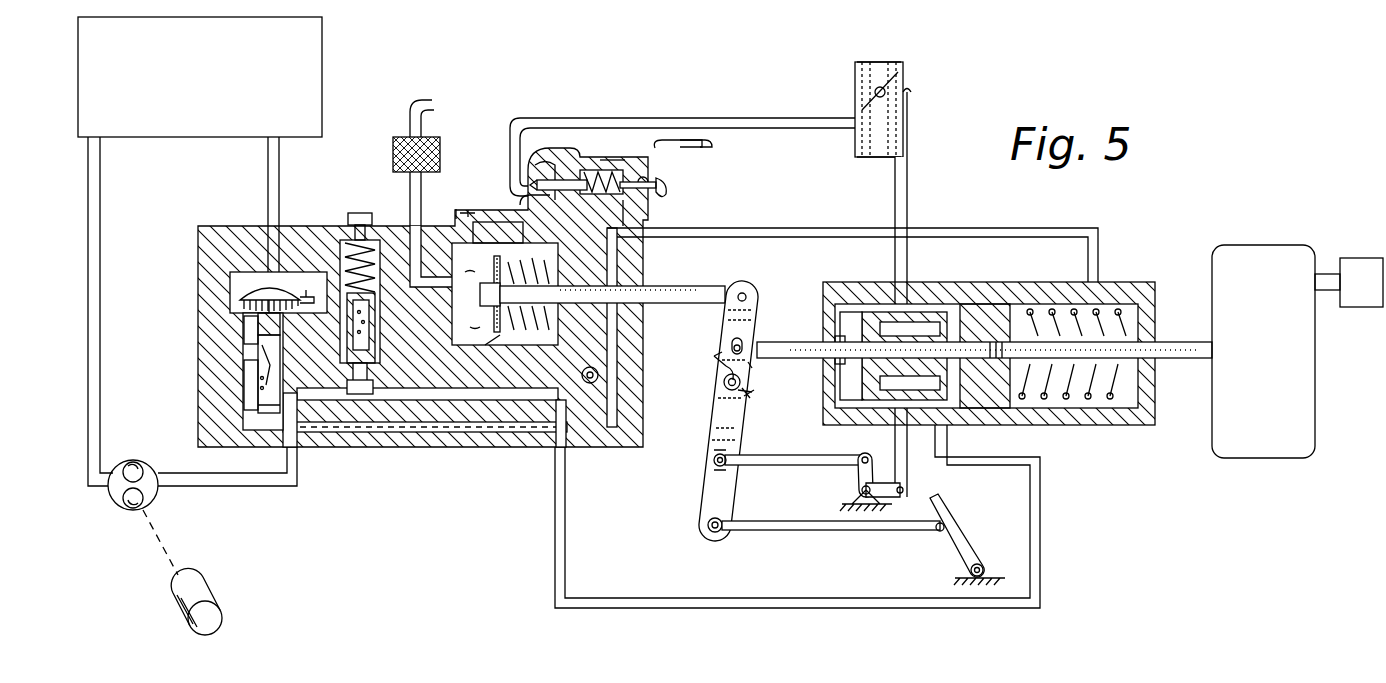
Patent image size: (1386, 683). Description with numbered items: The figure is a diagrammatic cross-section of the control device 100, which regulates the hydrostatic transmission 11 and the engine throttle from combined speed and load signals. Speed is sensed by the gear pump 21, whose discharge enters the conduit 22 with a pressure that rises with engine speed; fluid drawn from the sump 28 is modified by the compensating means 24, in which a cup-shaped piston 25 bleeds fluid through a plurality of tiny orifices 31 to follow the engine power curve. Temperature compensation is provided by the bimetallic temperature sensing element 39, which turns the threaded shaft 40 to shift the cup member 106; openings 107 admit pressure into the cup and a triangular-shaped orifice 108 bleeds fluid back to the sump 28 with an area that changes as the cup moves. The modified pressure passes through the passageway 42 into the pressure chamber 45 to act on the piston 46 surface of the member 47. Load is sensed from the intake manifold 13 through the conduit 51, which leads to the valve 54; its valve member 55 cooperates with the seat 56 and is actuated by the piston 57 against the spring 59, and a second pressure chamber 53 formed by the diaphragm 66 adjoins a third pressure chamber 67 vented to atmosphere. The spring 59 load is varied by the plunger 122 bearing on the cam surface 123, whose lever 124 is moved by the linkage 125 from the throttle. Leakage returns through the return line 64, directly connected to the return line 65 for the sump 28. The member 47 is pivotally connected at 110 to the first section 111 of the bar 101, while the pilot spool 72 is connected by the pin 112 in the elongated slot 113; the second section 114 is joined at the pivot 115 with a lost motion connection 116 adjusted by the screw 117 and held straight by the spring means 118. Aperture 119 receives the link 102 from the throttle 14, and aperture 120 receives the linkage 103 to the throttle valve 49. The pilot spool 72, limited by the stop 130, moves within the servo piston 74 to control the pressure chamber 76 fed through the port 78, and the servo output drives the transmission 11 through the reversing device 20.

The hydrostatic transmission 11 is at (1362, 260).
The intake manifold 13 is at (855, 135).
The throttle 14 is at (948, 530).
The reversing device 20 is at (1236, 258).
The pump means 21 is at (152, 497).
The conduit 22 is at (266, 483).
The compensating means 24 is at (350, 204).
The cup-shaped piston 25 is at (376, 340).
The sump 28 is at (202, 100).
The orifices 31 is at (372, 312).
The temperature sensing element 39 is at (248, 292).
The threaded shaft 40 is at (282, 322).
The passageway 42 is at (582, 372).
The pressure chamber 45 is at (520, 300).
The piston 46 is at (544, 260).
The member 47 is at (681, 286).
The throttle valve 49 is at (884, 88).
The conduit 51 is at (788, 118).
The second pressure chamber 53 is at (522, 343).
The valve 54 is at (568, 130).
The valve member 55 is at (548, 165).
The seat 56 is at (535, 185).
The piston 57 is at (598, 170).
The spring 59 is at (620, 146).
The return line 64 is at (650, 212).
The return line 65 is at (1046, 228).
The diaphragm 66 is at (471, 317).
The third pressure chamber 67 is at (473, 262).
The pilot spool 72 is at (800, 340).
The servo piston 74 is at (990, 306).
The pressure chamber 76 is at (851, 312).
The port 78 is at (945, 430).
The control device 100 is at (476, 92).
The bar 101 is at (706, 470).
The link 102 is at (800, 532).
The linkage 103 is at (908, 180).
The cup member 106 is at (282, 366).
The openings 107 is at (262, 390).
The triangular-shaped orifice 108 is at (255, 334).
The pivotal connection 110 is at (744, 290).
The first section 111 is at (727, 318).
The pin 112 is at (722, 349).
The elongated slot 113 is at (743, 345).
The second section 114 is at (716, 430).
The pivotal connection 115 is at (724, 386).
The lost motion connection 116 is at (752, 366).
The screw 117 is at (748, 400).
The spring means 118 is at (720, 368).
The aperture 119 is at (706, 528).
The aperture 120 is at (712, 460).
The plunger 122 is at (645, 178).
The cam surface 123 is at (668, 190).
The lever 124 is at (680, 150).
The linkage 125 is at (705, 143).
The stop 130 is at (838, 366).